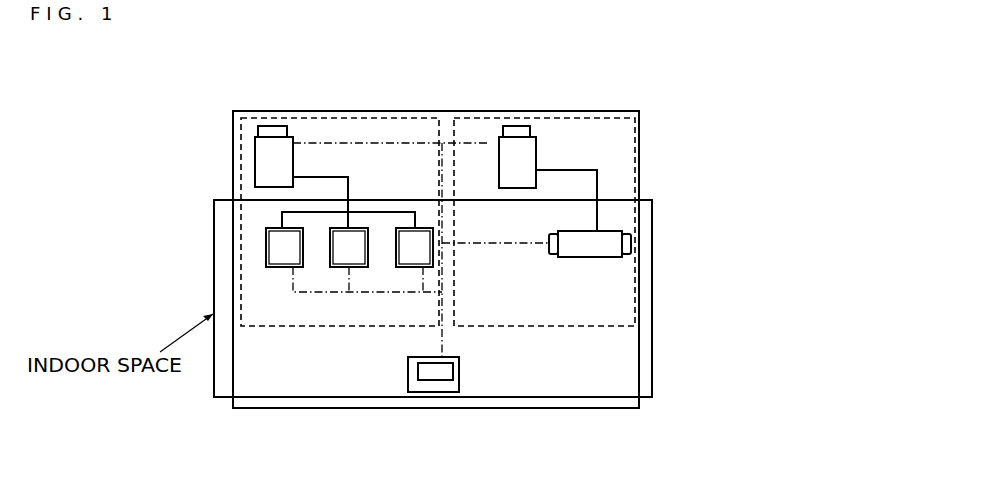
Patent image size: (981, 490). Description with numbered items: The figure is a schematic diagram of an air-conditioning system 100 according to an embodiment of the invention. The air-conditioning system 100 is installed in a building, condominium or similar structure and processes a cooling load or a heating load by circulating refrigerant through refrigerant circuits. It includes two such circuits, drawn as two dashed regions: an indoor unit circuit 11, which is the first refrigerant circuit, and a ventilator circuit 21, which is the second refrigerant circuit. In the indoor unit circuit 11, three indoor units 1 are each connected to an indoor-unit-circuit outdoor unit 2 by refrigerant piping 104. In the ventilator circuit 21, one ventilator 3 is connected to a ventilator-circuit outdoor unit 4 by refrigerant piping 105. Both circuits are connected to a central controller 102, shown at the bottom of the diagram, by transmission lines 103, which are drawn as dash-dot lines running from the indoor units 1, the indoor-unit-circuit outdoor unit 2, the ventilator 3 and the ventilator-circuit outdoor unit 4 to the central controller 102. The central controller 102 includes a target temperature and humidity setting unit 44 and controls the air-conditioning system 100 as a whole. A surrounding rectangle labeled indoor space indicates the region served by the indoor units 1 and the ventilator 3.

The indoor unit 1 is at (285, 253).
The indoor-unit-circuit outdoor unit 2 is at (287, 137).
The ventilator 3 is at (594, 248).
The ventilator-circuit outdoor unit 4 is at (533, 142).
The indoor unit circuit 11 is at (241, 148).
The ventilator circuit 21 is at (637, 160).
The target temperature and humidity setting unit 44 is at (449, 367).
The air-conditioning system 100 is at (641, 120).
The central controller 102 is at (444, 407).
The transmission line 103 is at (373, 295).
The refrigerant piping 104 is at (350, 180).
The refrigerant piping 105 is at (572, 169).